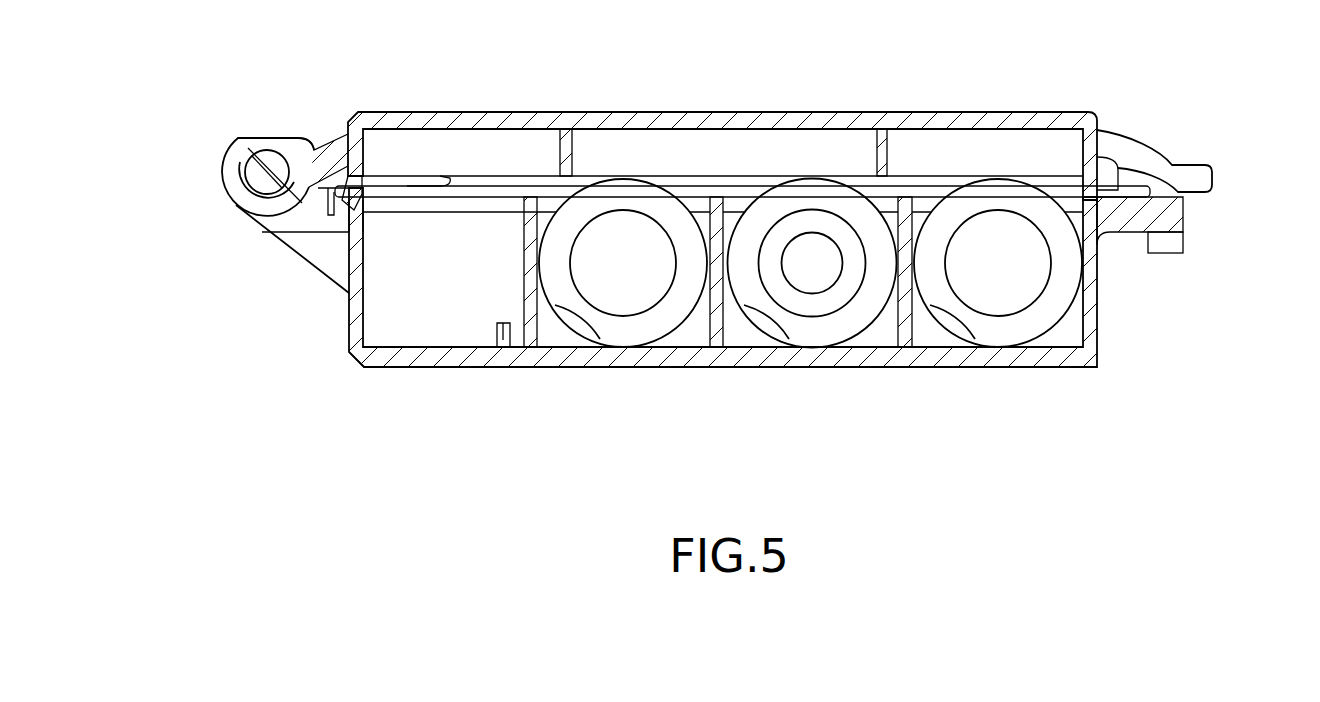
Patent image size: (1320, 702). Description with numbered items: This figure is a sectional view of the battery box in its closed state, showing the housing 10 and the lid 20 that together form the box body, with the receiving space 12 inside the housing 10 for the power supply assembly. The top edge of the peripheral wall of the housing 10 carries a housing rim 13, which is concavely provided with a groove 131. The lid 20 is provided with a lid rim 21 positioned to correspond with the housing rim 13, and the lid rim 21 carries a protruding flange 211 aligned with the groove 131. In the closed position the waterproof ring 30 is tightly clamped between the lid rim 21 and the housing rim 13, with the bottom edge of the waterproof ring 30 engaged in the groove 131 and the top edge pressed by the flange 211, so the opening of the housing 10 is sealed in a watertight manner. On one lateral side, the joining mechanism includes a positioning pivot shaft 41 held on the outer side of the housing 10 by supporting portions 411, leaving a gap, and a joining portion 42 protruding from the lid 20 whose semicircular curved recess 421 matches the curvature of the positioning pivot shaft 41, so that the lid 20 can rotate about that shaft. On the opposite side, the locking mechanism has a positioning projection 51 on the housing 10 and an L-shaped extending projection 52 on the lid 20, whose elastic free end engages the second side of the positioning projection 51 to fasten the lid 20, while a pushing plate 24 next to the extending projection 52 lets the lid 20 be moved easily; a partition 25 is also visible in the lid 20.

The housing 10 is at (555, 355).
The receiving space 12 is at (470, 320).
The housing rim 13 is at (362, 205).
The groove 131 is at (343, 217).
The lid 20 is at (750, 120).
The lid rim 21 is at (352, 150).
The flange 211 is at (343, 187).
The pushing plate 24 is at (1190, 175).
The partition 25 is at (572, 140).
The waterproof ring 30 is at (392, 185).
The positioning pivot shaft 41 is at (265, 166).
The supporting portion 411 is at (298, 245).
The joining portion 42 is at (255, 200).
The curved recess 421 is at (235, 178).
The positioning projection 51 is at (1185, 215).
The extending projection 52 is at (1170, 242).